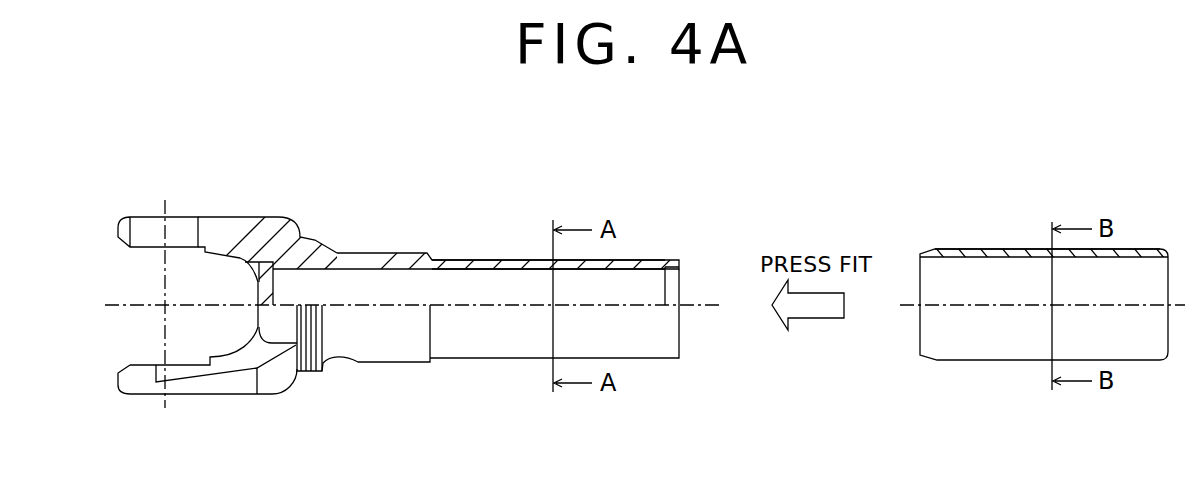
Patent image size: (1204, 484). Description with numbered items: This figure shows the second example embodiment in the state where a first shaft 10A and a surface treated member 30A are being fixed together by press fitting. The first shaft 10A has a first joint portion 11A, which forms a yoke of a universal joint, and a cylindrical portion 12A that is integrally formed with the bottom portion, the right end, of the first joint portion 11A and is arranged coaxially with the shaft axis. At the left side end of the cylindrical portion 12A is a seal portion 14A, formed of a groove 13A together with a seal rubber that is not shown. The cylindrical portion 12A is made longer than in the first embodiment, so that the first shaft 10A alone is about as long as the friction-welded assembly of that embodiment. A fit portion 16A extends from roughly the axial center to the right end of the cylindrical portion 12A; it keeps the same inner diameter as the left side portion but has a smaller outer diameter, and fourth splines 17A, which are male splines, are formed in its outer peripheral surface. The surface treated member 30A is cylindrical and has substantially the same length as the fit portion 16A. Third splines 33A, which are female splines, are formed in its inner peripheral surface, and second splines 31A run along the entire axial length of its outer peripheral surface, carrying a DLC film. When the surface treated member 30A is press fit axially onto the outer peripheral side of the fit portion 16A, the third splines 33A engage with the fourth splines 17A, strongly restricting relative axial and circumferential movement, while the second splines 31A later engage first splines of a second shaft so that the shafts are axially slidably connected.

The first shaft 10A is at (279, 281).
The first joint portion 11A is at (212, 388).
The cylindrical portion 12A is at (524, 307).
The groove 13A is at (308, 374).
The seal portion 14A is at (312, 228).
The fit portion 16A is at (528, 257).
The fourth splines 17A is at (477, 255).
The surface treated member 30A is at (1044, 261).
The second splines 31A is at (977, 246).
The third splines 33A is at (999, 259).